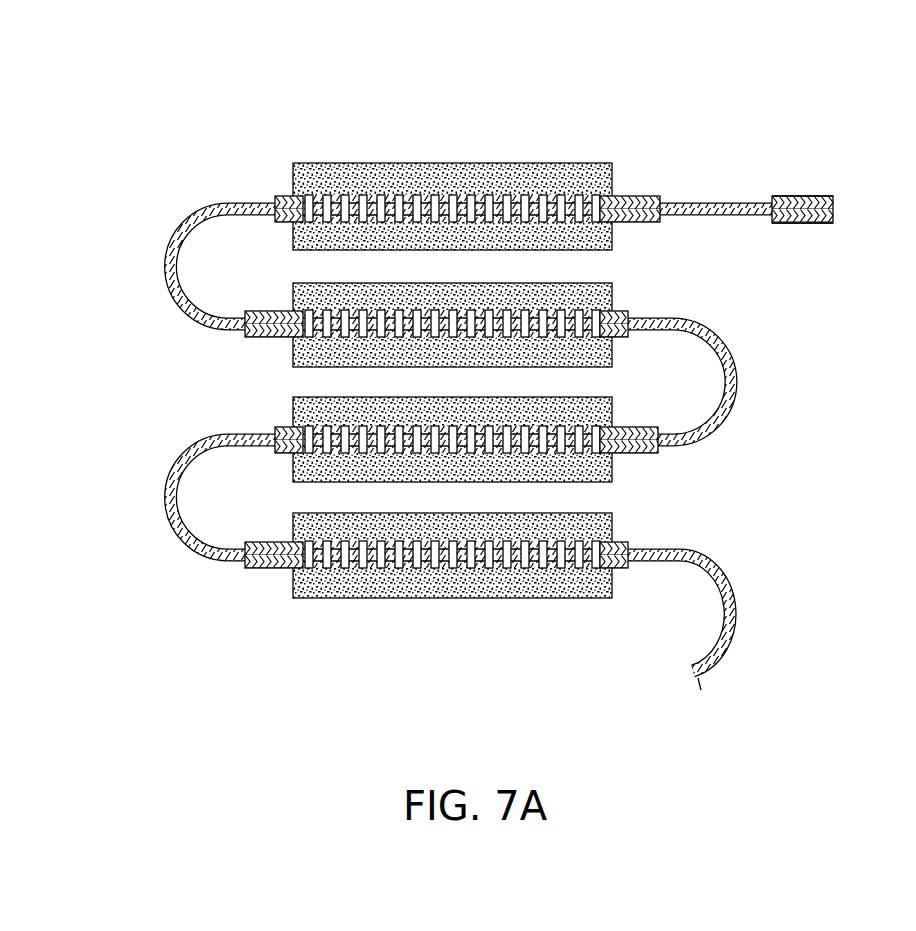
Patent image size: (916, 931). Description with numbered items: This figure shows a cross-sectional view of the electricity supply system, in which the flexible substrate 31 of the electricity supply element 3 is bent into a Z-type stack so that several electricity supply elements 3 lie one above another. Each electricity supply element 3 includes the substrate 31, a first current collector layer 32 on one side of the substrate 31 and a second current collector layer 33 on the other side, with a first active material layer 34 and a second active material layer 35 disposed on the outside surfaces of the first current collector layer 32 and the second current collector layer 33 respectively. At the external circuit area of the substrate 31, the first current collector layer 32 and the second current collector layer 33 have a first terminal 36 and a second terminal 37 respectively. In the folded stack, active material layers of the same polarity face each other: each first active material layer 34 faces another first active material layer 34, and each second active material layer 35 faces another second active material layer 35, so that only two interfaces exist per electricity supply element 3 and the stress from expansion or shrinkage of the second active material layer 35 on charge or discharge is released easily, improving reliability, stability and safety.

The electricity supply element 3 is at (523, 378).
The substrate 31 is at (834, 208).
The first current collector layer 32 is at (278, 200).
The second current collector layer 33 is at (280, 221).
The first active material layer 34 is at (294, 351).
The second active material layer 35 is at (613, 237).
The first terminal 36 is at (803, 197).
The second terminal 37 is at (805, 223).